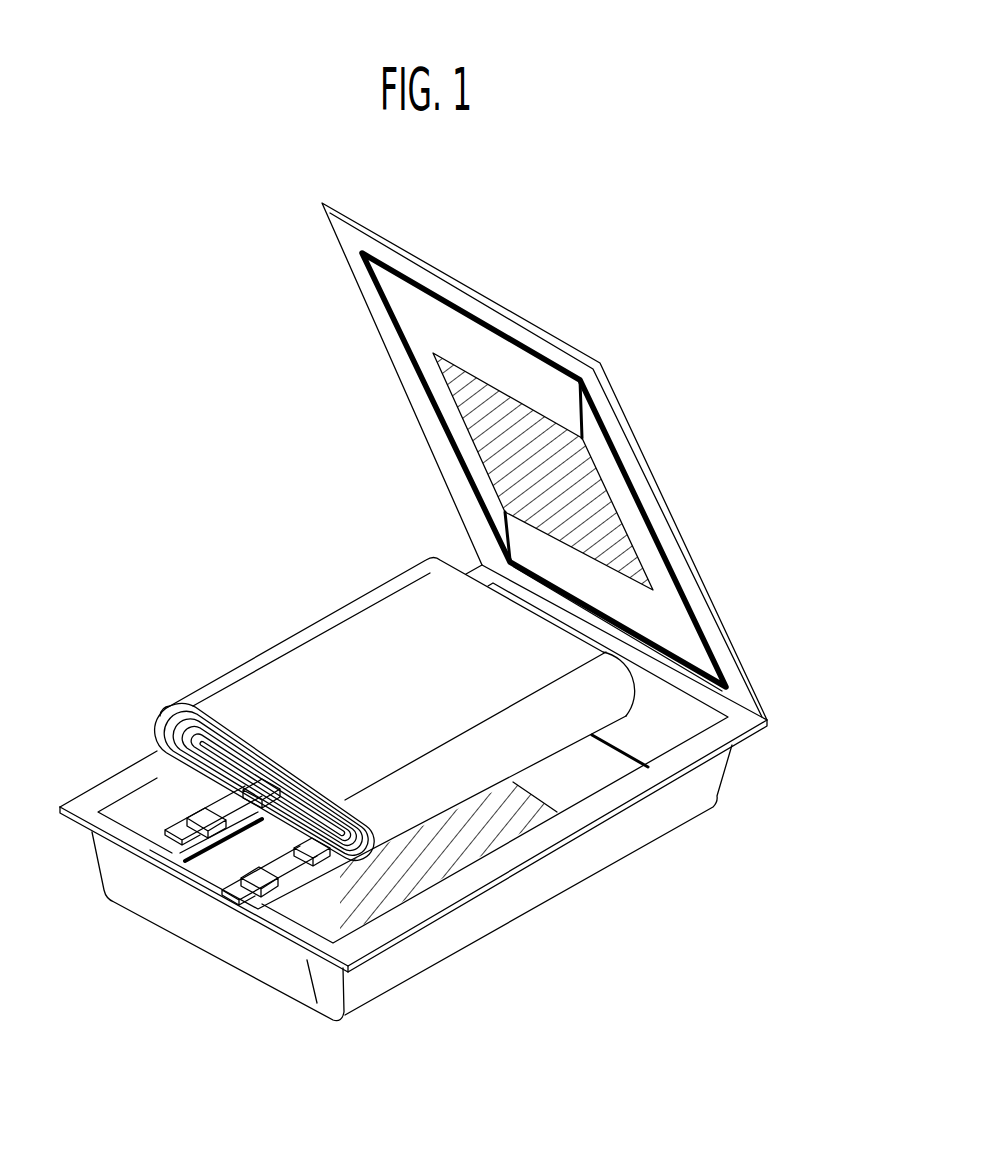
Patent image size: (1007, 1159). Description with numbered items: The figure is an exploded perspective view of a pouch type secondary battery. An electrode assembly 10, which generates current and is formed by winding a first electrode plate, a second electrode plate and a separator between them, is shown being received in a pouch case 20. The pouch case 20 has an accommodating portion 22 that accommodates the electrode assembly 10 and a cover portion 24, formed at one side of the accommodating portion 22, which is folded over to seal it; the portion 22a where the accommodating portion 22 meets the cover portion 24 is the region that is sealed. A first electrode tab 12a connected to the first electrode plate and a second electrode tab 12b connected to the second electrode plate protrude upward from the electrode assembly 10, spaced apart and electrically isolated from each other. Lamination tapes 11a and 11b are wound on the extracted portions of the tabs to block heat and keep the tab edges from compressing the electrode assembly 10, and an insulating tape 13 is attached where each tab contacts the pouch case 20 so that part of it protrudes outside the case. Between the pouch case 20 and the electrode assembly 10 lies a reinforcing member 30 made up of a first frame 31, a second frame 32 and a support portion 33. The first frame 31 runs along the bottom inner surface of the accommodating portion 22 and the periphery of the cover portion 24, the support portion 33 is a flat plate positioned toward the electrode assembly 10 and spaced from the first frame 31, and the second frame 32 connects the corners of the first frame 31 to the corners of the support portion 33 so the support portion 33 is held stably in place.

The electrode assembly 10 is at (352, 632).
The lamination tape 11a is at (257, 778).
The lamination tape 11b is at (297, 857).
The first electrode tab 12a is at (163, 838).
The second electrode tab 12b is at (213, 898).
The insulating tape 13 is at (197, 813).
The pouch case 20 is at (468, 793).
The accommodating portion 22 is at (720, 770).
The portion (sealing portion) 22a is at (528, 848).
The cover portion 24 is at (760, 683).
The reinforcing member 30 is at (544, 461).
The first frame 31 is at (588, 387).
The second frame 32 is at (580, 413).
The support portion 33 is at (690, 373).